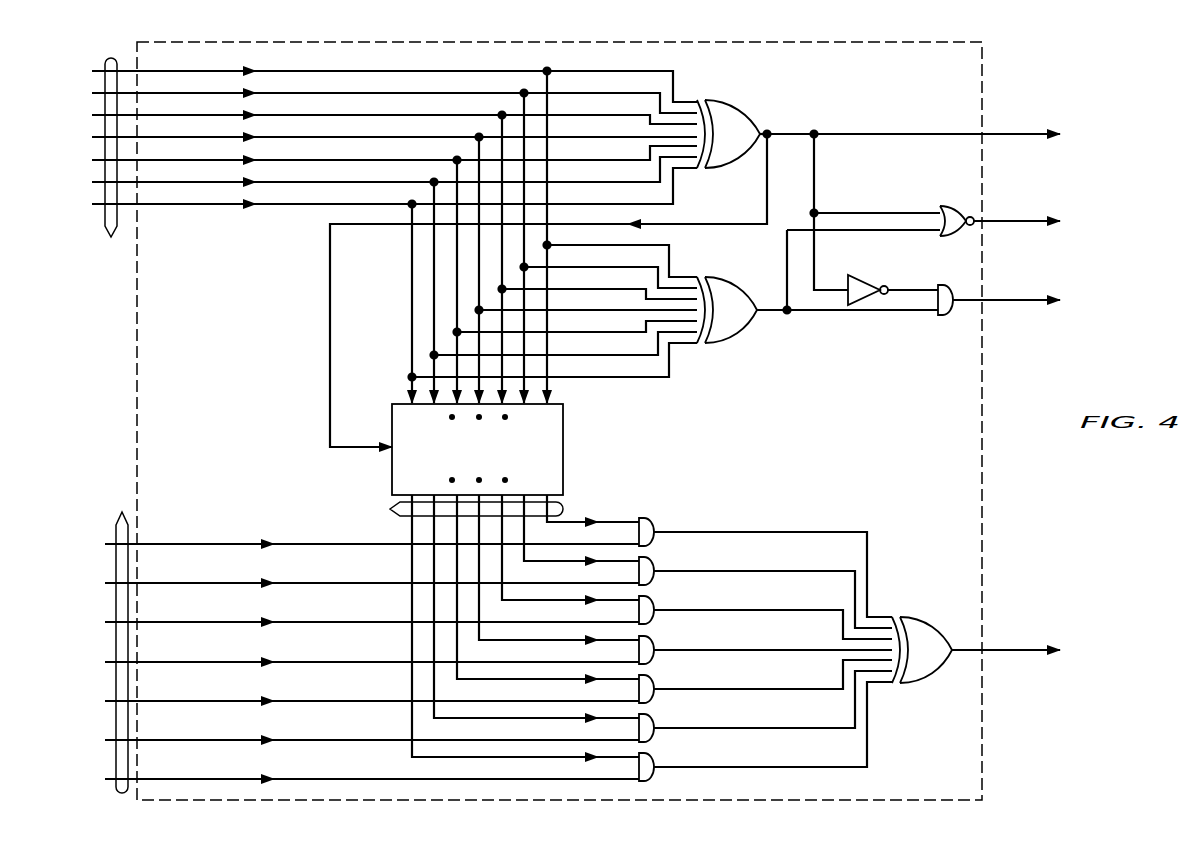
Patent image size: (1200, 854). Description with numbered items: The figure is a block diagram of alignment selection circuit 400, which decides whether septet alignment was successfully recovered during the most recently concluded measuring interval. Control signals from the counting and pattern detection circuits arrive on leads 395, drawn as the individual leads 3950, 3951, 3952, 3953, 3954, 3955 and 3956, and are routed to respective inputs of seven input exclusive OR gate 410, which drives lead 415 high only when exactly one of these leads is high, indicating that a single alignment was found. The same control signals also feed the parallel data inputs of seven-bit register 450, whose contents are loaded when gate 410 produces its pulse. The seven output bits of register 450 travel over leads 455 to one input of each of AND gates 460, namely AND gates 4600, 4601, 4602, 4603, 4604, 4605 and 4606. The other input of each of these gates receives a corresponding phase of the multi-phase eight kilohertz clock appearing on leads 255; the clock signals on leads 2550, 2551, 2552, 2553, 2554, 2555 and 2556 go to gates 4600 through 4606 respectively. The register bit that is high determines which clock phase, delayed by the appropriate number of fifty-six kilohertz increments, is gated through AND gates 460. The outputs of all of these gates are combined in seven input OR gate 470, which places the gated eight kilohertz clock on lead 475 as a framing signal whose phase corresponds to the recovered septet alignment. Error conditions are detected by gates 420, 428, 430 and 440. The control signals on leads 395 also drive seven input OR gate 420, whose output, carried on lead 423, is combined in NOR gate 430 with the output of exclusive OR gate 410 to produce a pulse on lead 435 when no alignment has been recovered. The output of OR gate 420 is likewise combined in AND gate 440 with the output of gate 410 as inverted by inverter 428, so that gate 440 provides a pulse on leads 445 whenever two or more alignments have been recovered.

The leads 255 is at (104, 642).
The lead 2550 is at (217, 779).
The lead 2551 is at (217, 740).
The lead 2552 is at (217, 701).
The lead 2553 is at (217, 662).
The lead 2554 is at (217, 622).
The lead 2555 is at (217, 583).
The lead 2556 is at (217, 544).
The leads 395 is at (100, 160).
The control signal lead 3950 is at (211, 68).
The control signal lead 3951 is at (211, 90).
The control signal lead 3952 is at (211, 112).
The control signal lead 3953 is at (211, 134).
The control signal lead 3954 is at (211, 157).
The control signal lead 3955 is at (211, 179).
The control signal lead 3956 is at (211, 201).
The alignment selection circuit 400 is at (983, 50).
The seven input exclusive OR gate 410 is at (750, 122).
The lead 415 is at (814, 134).
The seven input OR gate 420 is at (753, 330).
The signal line 423 is at (787, 288).
The inverter 428 is at (868, 275).
The NOR gate 430 is at (946, 207).
The lead 435 is at (1016, 220).
The AND gate 440 is at (942, 318).
The leads 445 is at (1016, 298).
The seven-bit register 450 is at (395, 403).
The leads 455 is at (390, 509).
The AND gates 460 is at (655, 503).
The AND gate 4600 is at (650, 776).
The AND gate 4601 is at (650, 737).
The AND gate 4602 is at (650, 698).
The AND gate 4603 is at (650, 659).
The AND gate 4604 is at (650, 619).
The AND gate 4605 is at (650, 580).
The AND gate 4606 is at (650, 541).
The seven input OR gate 470 is at (924, 617).
The lead 475 is at (1016, 648).